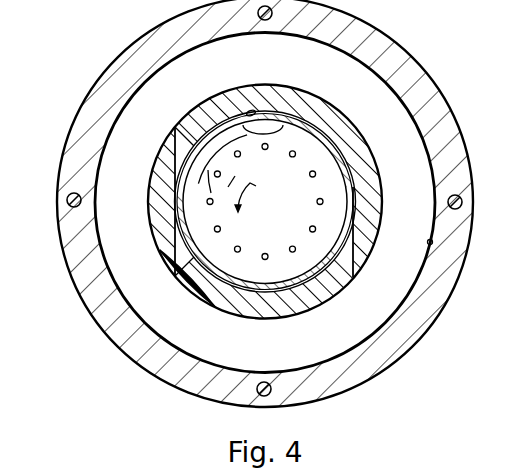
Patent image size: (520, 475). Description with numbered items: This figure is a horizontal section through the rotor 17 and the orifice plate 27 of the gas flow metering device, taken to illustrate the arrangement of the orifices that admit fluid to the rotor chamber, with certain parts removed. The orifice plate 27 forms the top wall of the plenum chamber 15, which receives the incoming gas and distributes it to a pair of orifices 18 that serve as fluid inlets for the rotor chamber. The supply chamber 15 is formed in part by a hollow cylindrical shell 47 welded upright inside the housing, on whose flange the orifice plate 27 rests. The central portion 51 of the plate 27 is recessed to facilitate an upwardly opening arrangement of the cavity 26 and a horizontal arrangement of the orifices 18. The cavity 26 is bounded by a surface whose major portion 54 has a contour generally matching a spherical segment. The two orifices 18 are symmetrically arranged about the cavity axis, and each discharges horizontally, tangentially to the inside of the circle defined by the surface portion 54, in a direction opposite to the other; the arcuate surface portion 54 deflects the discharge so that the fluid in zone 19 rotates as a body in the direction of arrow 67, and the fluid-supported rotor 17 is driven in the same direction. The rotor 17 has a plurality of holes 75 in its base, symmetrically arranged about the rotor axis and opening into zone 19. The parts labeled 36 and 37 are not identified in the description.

The plenum chamber 15 is at (433, 242).
The rotor 17 is at (343, 159).
The orifices 18 is at (176, 129).
The fluid zone 19 is at (303, 313).
The cavity 26 is at (249, 110).
The orifice plate 27 is at (379, 191).
The liner 36 is at (291, 124).
The wedge key 37 is at (163, 256).
The hollow cylindrical shell 47 is at (433, 328).
The central portion of the orifice plate 51 is at (250, 317).
The major portion of the cavity surface 54 is at (173, 224).
The arrow 67 is at (239, 173).
The holes 75 is at (290, 248).